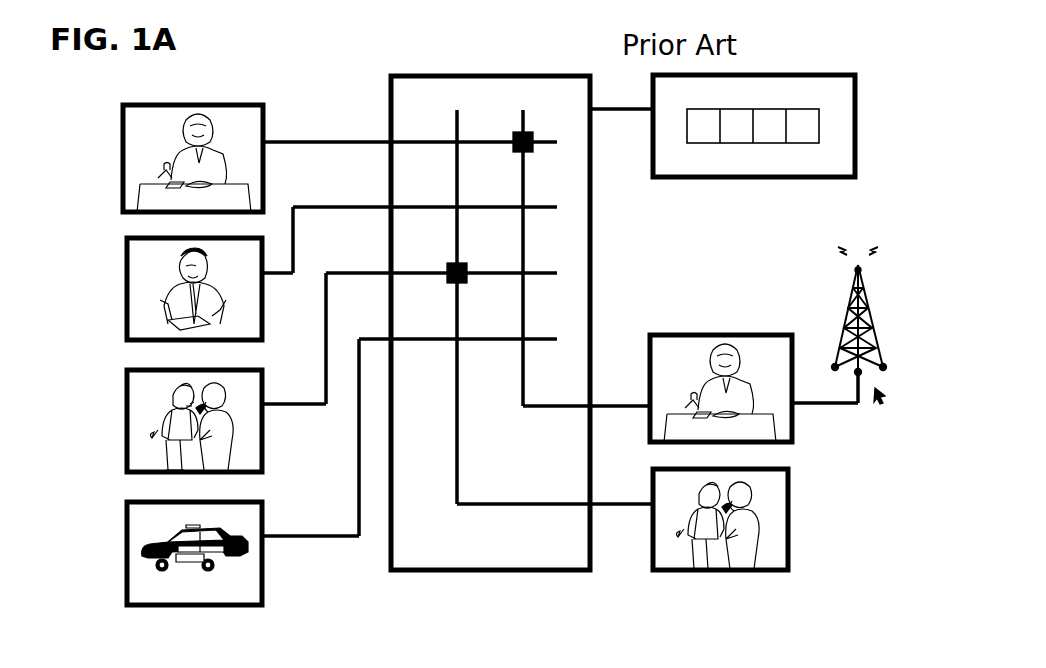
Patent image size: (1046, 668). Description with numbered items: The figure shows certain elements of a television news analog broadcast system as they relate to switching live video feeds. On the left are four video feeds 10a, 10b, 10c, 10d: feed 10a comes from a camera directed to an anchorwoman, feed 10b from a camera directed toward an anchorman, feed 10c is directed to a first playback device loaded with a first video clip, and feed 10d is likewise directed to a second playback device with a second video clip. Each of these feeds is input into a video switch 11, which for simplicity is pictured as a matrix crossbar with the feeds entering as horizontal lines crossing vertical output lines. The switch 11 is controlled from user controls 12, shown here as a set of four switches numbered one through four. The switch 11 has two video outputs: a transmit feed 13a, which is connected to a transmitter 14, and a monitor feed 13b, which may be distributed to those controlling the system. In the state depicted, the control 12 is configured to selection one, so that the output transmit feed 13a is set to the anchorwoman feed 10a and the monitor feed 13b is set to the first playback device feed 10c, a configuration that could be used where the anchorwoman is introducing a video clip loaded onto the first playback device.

The video feed 10a is at (122, 170).
The video feed 10b is at (126, 306).
The video feed 10c is at (126, 427).
The video feed 10d is at (126, 564).
The video switch 11 is at (390, 94).
The user controls 12 is at (690, 178).
The transmit feed 13a is at (723, 332).
The monitor feed 13b is at (790, 515).
The transmitter 14 is at (879, 408).